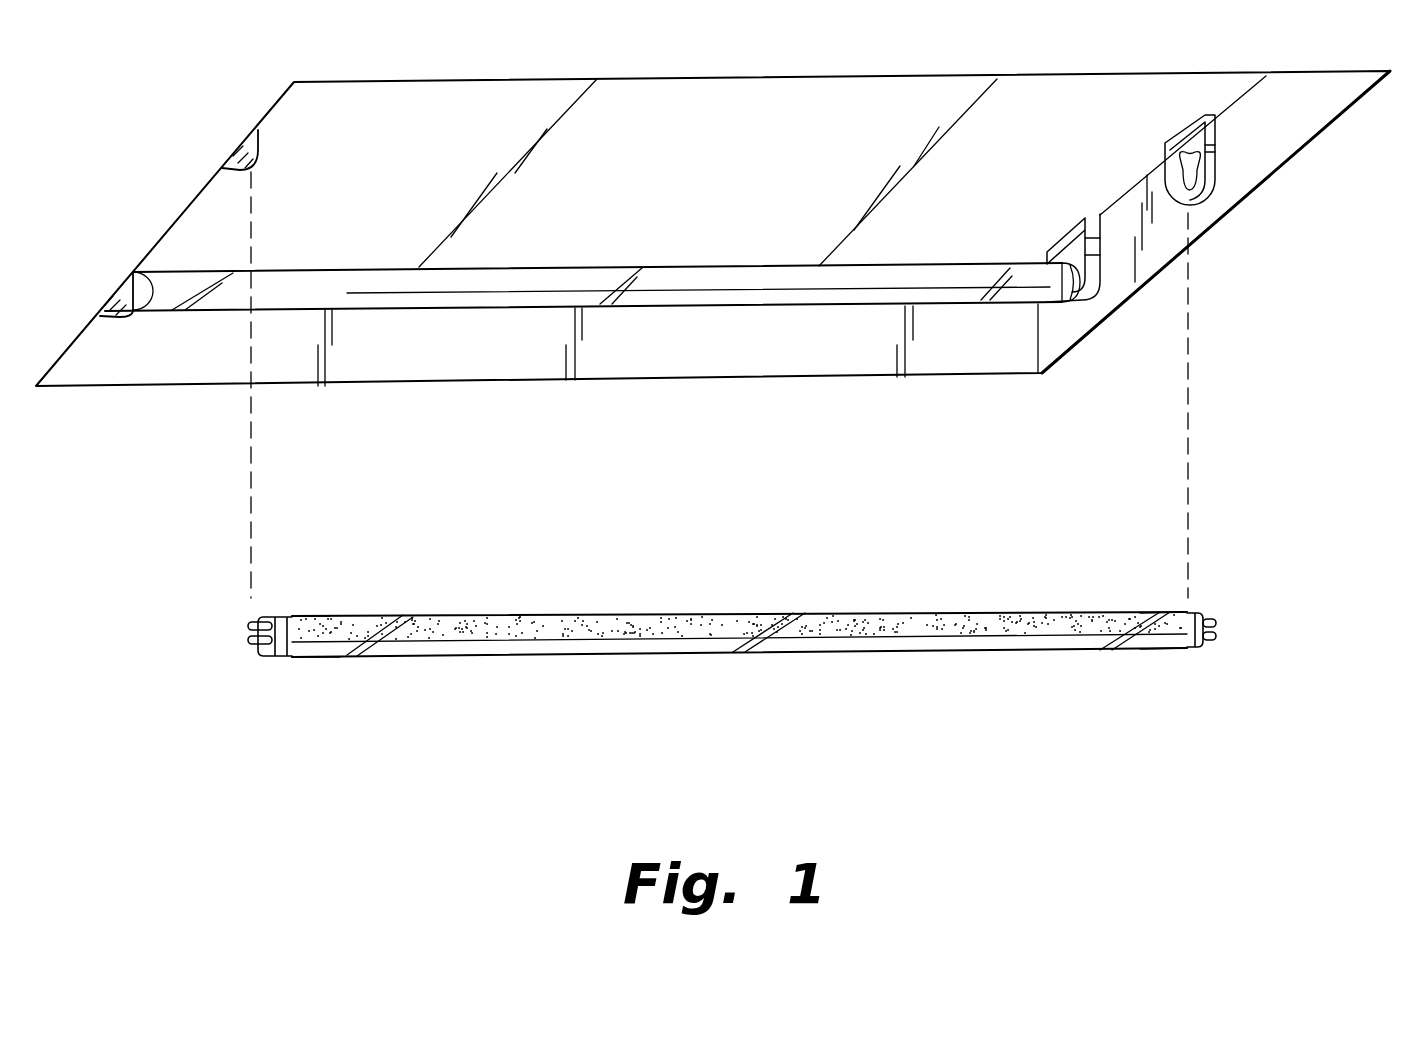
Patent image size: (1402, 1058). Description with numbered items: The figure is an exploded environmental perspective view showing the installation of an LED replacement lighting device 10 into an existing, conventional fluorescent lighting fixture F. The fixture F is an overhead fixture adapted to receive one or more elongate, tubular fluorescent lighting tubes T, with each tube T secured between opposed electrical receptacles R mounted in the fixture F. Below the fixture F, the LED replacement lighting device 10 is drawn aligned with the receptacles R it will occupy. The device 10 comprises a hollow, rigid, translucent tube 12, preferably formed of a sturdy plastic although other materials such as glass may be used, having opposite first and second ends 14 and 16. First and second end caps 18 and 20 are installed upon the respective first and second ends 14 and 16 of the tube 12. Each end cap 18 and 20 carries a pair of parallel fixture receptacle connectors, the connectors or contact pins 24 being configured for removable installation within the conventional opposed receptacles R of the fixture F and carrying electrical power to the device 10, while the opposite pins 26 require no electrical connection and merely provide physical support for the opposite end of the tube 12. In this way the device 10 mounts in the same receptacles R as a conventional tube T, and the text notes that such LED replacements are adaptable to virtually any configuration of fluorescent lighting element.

The LED replacement lighting device 10 is at (734, 714).
The tube 12 is at (762, 653).
The first end 14 is at (332, 658).
The second end 16 is at (1170, 650).
The first end cap 18 is at (268, 657).
The second end cap 20 is at (1194, 648).
The connectors 24 is at (248, 633).
The pins 26 is at (1216, 634).
The electrical receptacles R is at (228, 170).
The fluorescent lighting tube T is at (668, 307).
The fluorescent lighting fixture F is at (718, 380).